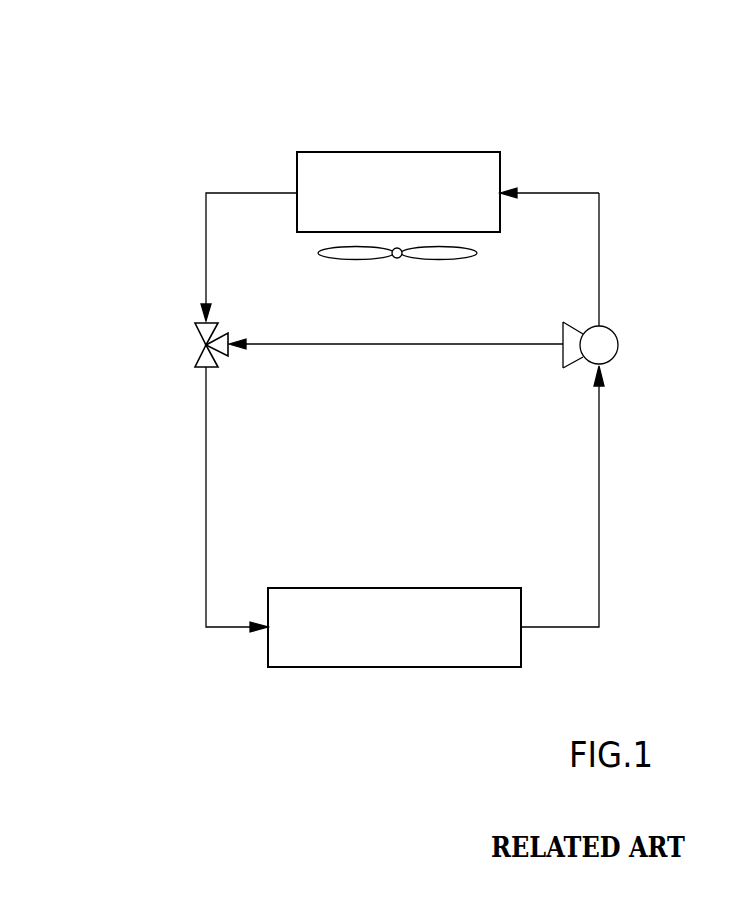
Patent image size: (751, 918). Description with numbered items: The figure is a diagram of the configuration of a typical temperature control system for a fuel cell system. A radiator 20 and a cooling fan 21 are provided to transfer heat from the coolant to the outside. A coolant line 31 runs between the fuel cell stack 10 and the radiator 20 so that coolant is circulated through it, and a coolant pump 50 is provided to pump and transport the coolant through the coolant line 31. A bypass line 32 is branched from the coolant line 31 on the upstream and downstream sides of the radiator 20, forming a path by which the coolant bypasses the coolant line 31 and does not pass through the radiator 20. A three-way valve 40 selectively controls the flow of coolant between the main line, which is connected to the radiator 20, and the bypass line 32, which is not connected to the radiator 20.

The fuel cell stack 10 is at (410, 667).
The radiator 20 is at (413, 150).
The cooling fan 21 is at (318, 259).
The coolant line 31 is at (599, 255).
The bypass line 32 is at (427, 343).
The three-way valve 40 is at (200, 348).
The coolant pump 50 is at (617, 353).